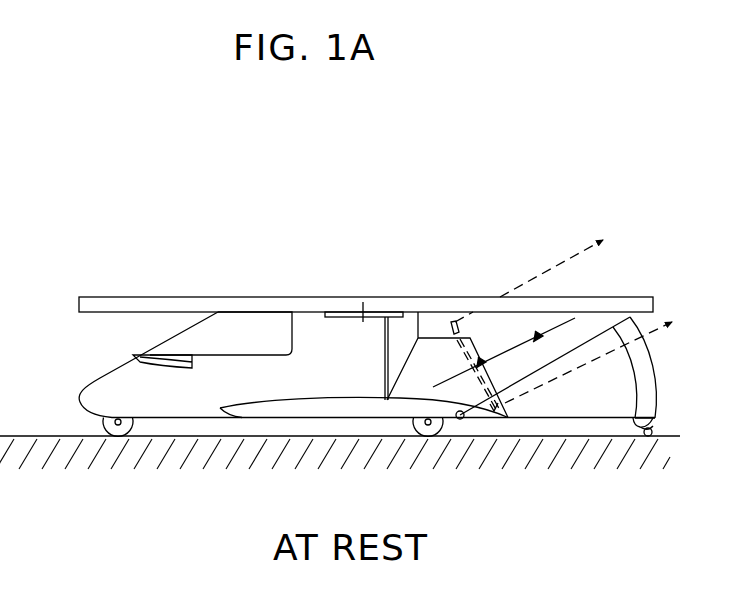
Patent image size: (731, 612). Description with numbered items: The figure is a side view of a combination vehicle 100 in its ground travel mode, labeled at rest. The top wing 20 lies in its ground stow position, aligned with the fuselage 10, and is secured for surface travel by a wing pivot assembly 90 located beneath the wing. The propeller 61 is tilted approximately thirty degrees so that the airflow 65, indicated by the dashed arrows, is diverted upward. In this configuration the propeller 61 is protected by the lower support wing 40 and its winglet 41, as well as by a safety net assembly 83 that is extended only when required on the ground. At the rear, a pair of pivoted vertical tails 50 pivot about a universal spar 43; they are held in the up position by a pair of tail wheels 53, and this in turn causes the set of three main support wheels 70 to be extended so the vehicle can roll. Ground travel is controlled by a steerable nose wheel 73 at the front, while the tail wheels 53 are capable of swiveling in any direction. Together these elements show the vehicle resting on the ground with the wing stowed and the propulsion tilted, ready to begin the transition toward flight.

The combination vehicle 100 is at (328, 282).
The fuselage 10 is at (100, 378).
The top wing 20 is at (168, 297).
The lower support wing 40 is at (363, 418).
The winglet 41 is at (457, 370).
The universal spar 43 is at (462, 420).
The pivoted vertical tails 50 is at (610, 400).
The tail wheels 53 is at (653, 432).
The propeller 61 is at (456, 330).
The airflow 65 is at (568, 260).
The main support wheels 70 is at (418, 436).
The steerable nose wheel 73 is at (112, 437).
The safety net assembly 83 is at (384, 345).
The wing pivot assembly 90 is at (362, 320).